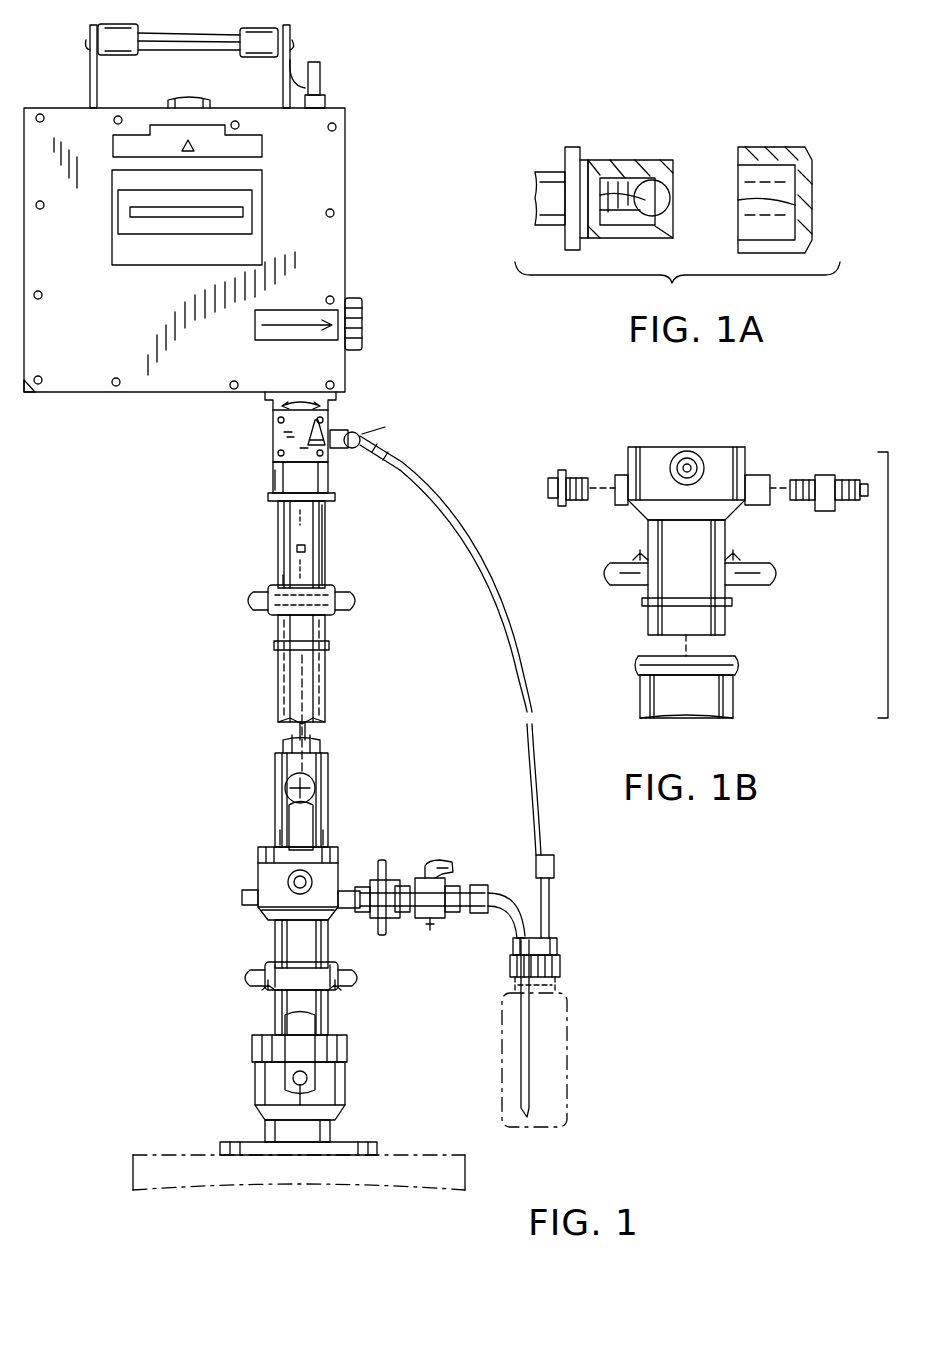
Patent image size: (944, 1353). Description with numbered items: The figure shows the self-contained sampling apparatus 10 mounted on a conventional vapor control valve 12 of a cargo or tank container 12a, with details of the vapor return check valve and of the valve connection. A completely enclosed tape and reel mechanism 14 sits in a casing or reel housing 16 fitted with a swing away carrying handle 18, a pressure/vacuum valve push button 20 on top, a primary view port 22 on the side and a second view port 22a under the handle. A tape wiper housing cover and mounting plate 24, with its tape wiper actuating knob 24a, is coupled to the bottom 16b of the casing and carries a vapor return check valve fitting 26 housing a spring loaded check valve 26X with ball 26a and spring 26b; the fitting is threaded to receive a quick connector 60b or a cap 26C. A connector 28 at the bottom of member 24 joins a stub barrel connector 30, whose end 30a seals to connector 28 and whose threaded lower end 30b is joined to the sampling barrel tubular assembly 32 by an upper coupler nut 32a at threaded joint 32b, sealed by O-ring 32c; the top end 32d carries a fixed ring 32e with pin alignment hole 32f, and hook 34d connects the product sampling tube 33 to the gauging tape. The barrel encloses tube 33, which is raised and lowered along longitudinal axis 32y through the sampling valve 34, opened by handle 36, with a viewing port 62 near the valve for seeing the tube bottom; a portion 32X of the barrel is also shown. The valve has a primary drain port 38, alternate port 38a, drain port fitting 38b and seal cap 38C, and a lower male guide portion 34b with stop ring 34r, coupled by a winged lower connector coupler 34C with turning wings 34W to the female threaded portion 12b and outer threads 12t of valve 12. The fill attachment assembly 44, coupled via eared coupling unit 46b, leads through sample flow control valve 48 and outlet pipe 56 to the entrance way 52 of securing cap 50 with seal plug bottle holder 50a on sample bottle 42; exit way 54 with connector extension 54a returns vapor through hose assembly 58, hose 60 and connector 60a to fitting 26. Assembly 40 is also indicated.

In FIG. 1, the apparatus 10 is at (68, 105).
In FIG. 1, the vapor control valve 12 is at (328, 1090).
In FIG. 1B, the vapor control valve 12 is at (737, 692).
In FIG. 1, the cargo or tank container 12a is at (402, 1153).
In FIG. 1, the female top threaded portion 12b is at (331, 1050).
In FIG. 1B, the outer threaded portion 12t is at (640, 664).
In FIG. 1, the tape and reel mechanism 14 is at (361, 194).
In FIG. 1, the casing or reel housing 16 is at (33, 393).
In FIG. 1, the bottom of casing 16b is at (77, 392).
In FIG. 1, the swing away carrying handle 18 is at (262, 28).
In FIG. 1, the pressure/vacuum valve push button 20 is at (323, 70).
In FIG. 1, the sight or view port 22 is at (362, 330).
In FIG. 1, the second view port 22a is at (190, 98).
In FIG. 1, the tape wiper housing cover and wiper component mounting plate 24 is at (272, 431).
In FIG. 1, the tape wiper actuating knob 24a is at (275, 450).
In FIG. 1, the vapor return check valve fitting 26 is at (335, 418).
In FIG. 1A, the vapor return check valve fitting 26 is at (552, 170).
In FIG. 1, the ball 26a is at (340, 450).
In FIG. 1A, the ball 26a is at (668, 192).
In FIG. 1A, the spring 26b is at (630, 188).
In FIG. 1A, the cap 26C is at (757, 160).
In FIG. 1A, the spring loaded vapor return check valve 26X is at (591, 152).
In FIG. 1, the connector 28 is at (330, 465).
In FIG. 1, the stub barrel connector 30 is at (278, 520).
In FIG. 1, the end of stub barrel connector 30a is at (335, 495).
In FIG. 1, the externally threaded lower stub barrel end 30b is at (248, 592).
In FIG. 1, the sampling barrel tubular assembly 32 is at (275, 785).
In FIG. 1, the upper coupler nut 32a is at (340, 589).
In FIG. 1, the threaded joint 32b is at (348, 612).
In FIG. 1, the O-ring 32c is at (278, 647).
In FIG. 1, the top end of sampling barrel 32d is at (330, 638).
In FIG. 1, the fixed ring 32e is at (258, 610).
In FIG. 1, the pin alignment hole 32f is at (278, 672).
In FIG. 1, the tube section 32X is at (275, 826).
In FIG. 1, the longitudinal axis 32y is at (318, 735).
In FIG. 1, the product sampling tube 33 is at (320, 722).
In FIG. 1, the sampling valve 34 is at (265, 883).
In FIG. 1, the male tubular guide portion 34b is at (270, 1010).
In FIG. 1B, the male tubular guide portion 34b is at (730, 620).
In FIG. 1, the lower connector coupler 34C is at (330, 985).
In FIG. 1B, the lower connector coupler 34C is at (660, 558).
In FIG. 1, the hook 34d is at (290, 582).
In FIG. 1B, the stop ring 34r is at (735, 602).
In FIG. 1, the turning wings 34W is at (350, 980).
In FIG. 1B, the turning wings 34W is at (775, 578).
In FIG. 1, the sampling valve handle 36 is at (312, 801).
In FIG. 1, the outlet drain port 38 is at (340, 895).
In FIG. 1, the alternate outlet drain port 38a is at (255, 895).
In FIG. 1, the drain port fitting 38b is at (365, 912).
In FIG. 1B, the drain port fitting 38b is at (825, 478).
In FIG. 1B, the cap closure or pipe plug 38C is at (565, 474).
In FIG. 1, the pump assembly 40 is at (162, 740).
In FIG. 1, the sample bottle 42 is at (570, 1050).
In FIG. 1, the bottle fill attachment assembly 44 is at (524, 884).
In FIG. 1, the eared coupling unit 46b is at (386, 875).
In FIG. 1, the sample flow control valve 48 is at (440, 890).
In FIG. 1, the securing cap 50 is at (560, 962).
In FIG. 1, the seal plug bottle holder 50a is at (560, 941).
In FIG. 1, the entrance way 52 is at (525, 934).
In FIG. 1, the exit way 54 is at (555, 932).
In FIG. 1, the connector extension 54a is at (552, 892).
In FIG. 1, the outlet pipe 56 is at (494, 898).
In FIG. 1, the vapor return and control hose assembly 58 is at (522, 606).
In FIG. 1, the vapor return hose 60 is at (528, 655).
In FIG. 1, the connector 60a is at (554, 858).
In FIG. 1, the quick connector 60b is at (360, 433).
In FIG. 1, the viewing port 62 is at (285, 795).